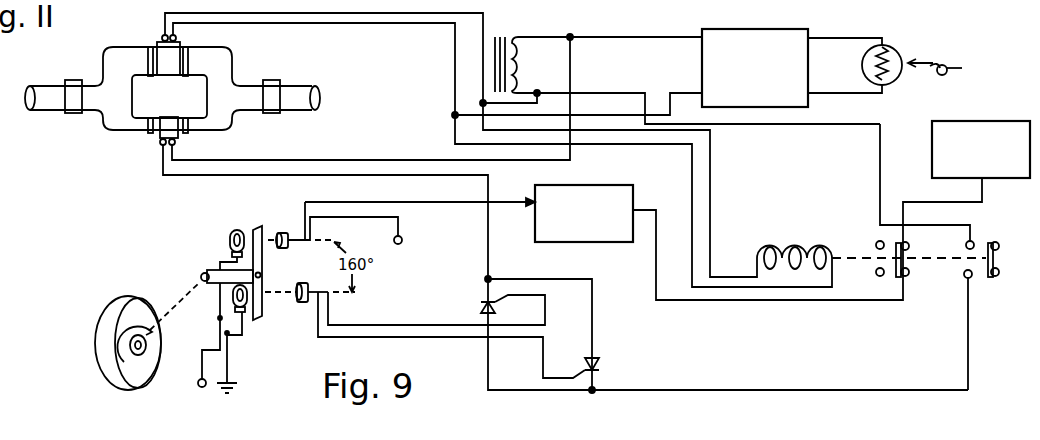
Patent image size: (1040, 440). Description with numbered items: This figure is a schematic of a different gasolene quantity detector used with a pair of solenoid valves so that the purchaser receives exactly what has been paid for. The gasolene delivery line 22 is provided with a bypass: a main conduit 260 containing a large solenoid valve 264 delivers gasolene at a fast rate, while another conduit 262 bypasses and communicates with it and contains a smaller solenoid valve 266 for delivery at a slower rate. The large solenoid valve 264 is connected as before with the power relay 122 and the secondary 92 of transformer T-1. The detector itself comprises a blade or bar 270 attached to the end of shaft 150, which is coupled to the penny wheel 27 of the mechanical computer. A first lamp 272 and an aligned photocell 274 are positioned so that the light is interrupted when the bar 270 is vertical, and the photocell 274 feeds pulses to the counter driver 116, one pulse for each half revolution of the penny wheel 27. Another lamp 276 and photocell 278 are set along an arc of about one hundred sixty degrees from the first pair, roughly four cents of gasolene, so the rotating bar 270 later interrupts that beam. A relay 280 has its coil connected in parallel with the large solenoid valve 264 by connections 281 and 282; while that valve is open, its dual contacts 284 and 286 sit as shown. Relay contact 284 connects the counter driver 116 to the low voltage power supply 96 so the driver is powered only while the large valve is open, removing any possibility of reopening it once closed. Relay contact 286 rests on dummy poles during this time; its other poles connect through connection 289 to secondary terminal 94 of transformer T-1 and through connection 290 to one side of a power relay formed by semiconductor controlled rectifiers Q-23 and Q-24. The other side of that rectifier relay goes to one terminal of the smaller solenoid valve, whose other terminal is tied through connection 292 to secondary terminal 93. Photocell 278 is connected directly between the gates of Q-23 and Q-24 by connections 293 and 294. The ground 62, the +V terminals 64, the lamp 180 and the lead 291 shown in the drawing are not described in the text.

The gasolene delivery line 22 is at (296, 85).
The penny wheel 27 is at (106, 312).
The ground 62 is at (234, 392).
The +V supply terminal 64 is at (404, 244).
The secondary 92 is at (520, 76).
The secondary terminal 93 is at (562, 24).
The secondary terminal 94 is at (585, 92).
The low voltage power supply 96 is at (976, 121).
The counter driver 116 is at (602, 242).
The power relay 122 is at (782, 14).
The shaft 150 is at (206, 270).
The lamp 180 is at (912, 44).
The main conduit 260 is at (130, 52).
The bypass conduit 262 is at (132, 128).
The large solenoid valve 264 is at (176, 42).
The smaller solenoid valve 266 is at (178, 140).
The bar 270 is at (260, 226).
The first lamp 272 is at (230, 240).
The photocell 274 is at (282, 232).
The lamp 276 is at (233, 308).
The photocell 278 is at (306, 284).
The relay 280 is at (810, 236).
The connection 281 is at (712, 182).
The connection 282 is at (692, 180).
The relay contact 284 is at (910, 254).
The relay contact 286 is at (1000, 260).
The connection 289 is at (866, 124).
The connection 290 is at (850, 389).
The conductor 291 is at (486, 261).
The connection 292 is at (356, 164).
The connection 293 is at (406, 324).
The connection 294 is at (419, 340).
The transformer T-1 is at (500, 53).
The semiconductor controlled rectifier Q-23 is at (467, 307).
The semiconductor controlled rectifier Q-24 is at (615, 367).